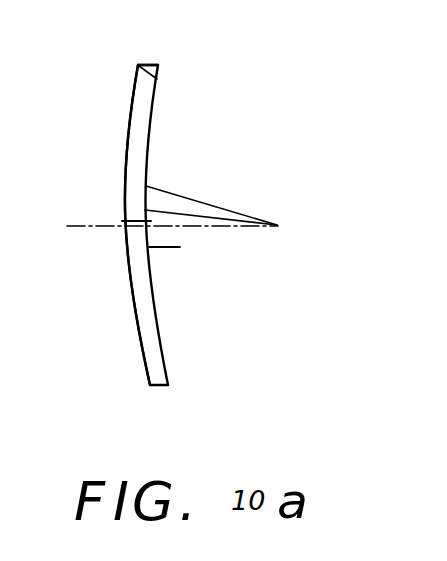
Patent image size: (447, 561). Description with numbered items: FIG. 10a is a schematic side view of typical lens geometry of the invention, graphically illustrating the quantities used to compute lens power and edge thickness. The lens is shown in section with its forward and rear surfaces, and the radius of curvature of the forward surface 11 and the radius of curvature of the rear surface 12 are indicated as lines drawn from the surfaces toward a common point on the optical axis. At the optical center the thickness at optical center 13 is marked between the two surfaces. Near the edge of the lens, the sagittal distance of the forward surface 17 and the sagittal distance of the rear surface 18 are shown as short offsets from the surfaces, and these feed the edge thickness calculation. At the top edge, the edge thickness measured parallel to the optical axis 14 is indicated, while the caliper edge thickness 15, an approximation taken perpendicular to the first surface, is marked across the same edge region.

The radius of curvature of forward surface 11 is at (170, 213).
The radius of curvature of rear surface 12 is at (240, 214).
The thickness at optical center 13 is at (133, 226).
The edge thickness measured parallel to optical axis 14 is at (158, 66).
The caliper edge thickness 15 is at (155, 68).
The sagittal distance of forward surface 17 is at (122, 221).
The sagittal distance of rear surface 18 is at (174, 248).